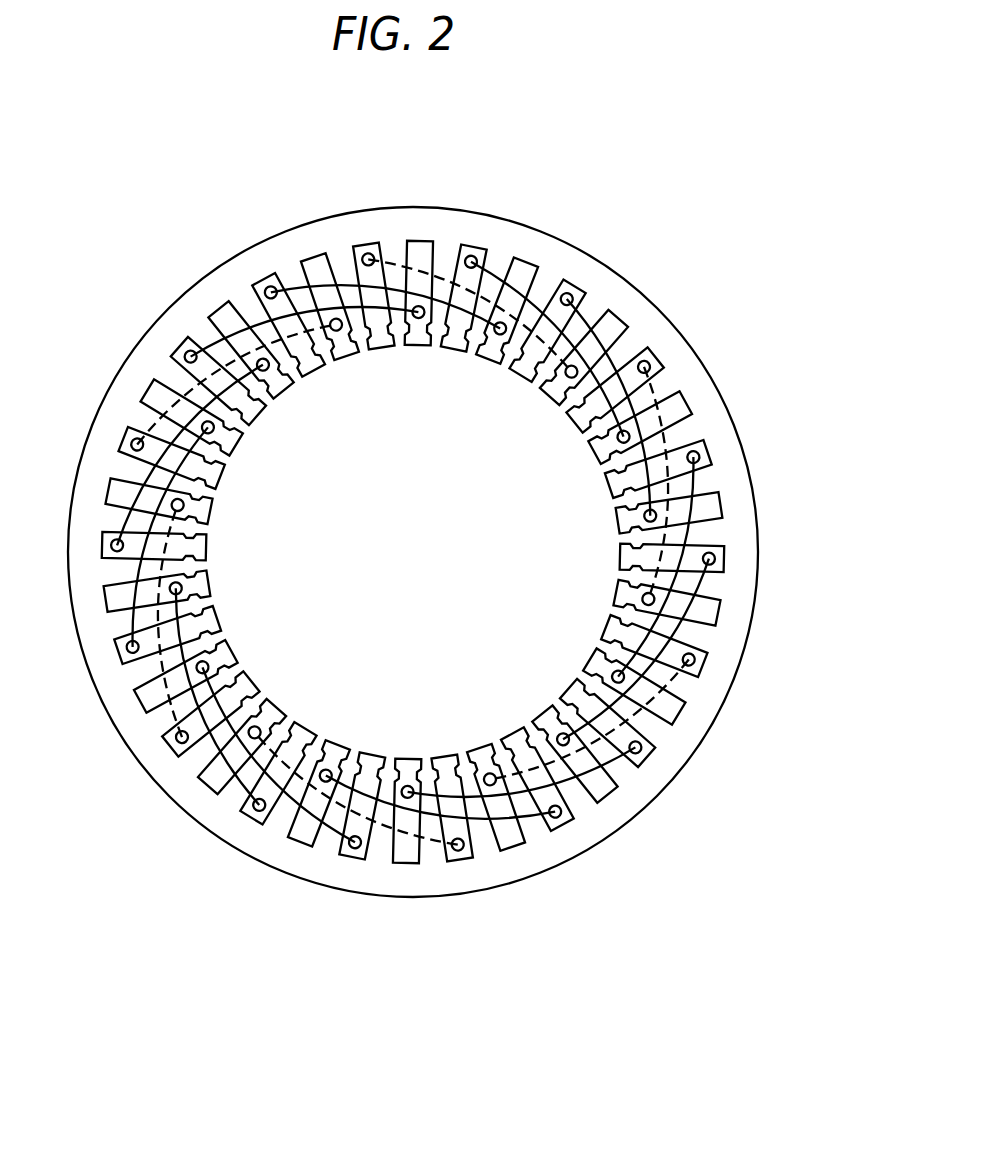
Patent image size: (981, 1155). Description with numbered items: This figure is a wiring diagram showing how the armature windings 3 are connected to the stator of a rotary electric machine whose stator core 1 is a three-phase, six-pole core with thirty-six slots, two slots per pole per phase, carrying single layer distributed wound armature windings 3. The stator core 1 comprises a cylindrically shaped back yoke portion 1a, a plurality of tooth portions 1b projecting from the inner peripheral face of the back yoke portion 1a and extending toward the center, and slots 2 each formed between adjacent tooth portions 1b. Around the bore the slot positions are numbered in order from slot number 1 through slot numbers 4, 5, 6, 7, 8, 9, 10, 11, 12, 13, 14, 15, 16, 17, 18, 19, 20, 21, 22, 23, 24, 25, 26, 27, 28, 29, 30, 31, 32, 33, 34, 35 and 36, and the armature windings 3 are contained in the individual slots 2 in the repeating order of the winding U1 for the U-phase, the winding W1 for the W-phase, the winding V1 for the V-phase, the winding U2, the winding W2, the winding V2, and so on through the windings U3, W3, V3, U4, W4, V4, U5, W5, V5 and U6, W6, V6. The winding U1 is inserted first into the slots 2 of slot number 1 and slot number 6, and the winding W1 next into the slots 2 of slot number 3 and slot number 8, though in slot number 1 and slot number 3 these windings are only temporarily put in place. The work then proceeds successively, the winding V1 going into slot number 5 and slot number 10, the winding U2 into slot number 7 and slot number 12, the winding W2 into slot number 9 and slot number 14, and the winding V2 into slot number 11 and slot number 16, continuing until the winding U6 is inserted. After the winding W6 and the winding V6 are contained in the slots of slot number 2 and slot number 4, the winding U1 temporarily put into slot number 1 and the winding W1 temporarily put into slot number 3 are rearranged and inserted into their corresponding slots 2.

The stator core 1 is at (388, 150).
The back yoke portion 1a is at (506, 234).
The tooth portions 1b is at (362, 352).
The slots 2 is at (307, 440).
The armature windings 3 is at (752, 311).
The winding U1 is at (342, 255).
The winding U2 is at (130, 447).
The winding U3 is at (200, 748).
The winding U4 is at (462, 855).
The winding U5 is at (680, 632).
The winding U6 is at (650, 362).
The winding V1 is at (185, 356).
The winding V2 is at (140, 670).
The winding V3 is at (358, 852).
The winding V4 is at (660, 745).
The winding V5 is at (698, 456).
The winding V6 is at (447, 268).
The winding W1 is at (266, 290).
The winding W2 is at (108, 545).
The winding W3 is at (260, 808).
The winding W4 is at (578, 788).
The winding W5 is at (695, 545).
The winding W6 is at (566, 296).
The slot number 4 is at (383, 357).
The slot number 5 is at (330, 313).
The slot number 6 is at (288, 330).
The slot number 7 is at (251, 354).
The slot number 8 is at (220, 384).
The slot number 9 is at (196, 419).
The slot number 10 is at (179, 458).
The slot number 11 is at (167, 501).
The slot number 12 is at (164, 546).
The slot number 13 is at (166, 590).
The slot number 14 is at (175, 635).
The slot number 15 is at (192, 675).
The slot number 16 is at (215, 711).
The slot number 17 is at (245, 742).
The slot number 18 is at (280, 767).
The slot number 19 is at (320, 786).
The slot number 20 is at (362, 798).
The slot number 21 is at (407, 801).
The slot number 22 is at (451, 799).
The slot number 23 is at (495, 790).
The slot number 24 is at (536, 773).
The slot number 25 is at (572, 750).
The slot number 26 is at (603, 720).
The slot number 27 is at (628, 685).
The slot number 28 is at (647, 646).
The slot number 29 is at (658, 603).
The slot number 30 is at (662, 558).
The slot number 31 is at (660, 512).
The slot number 32 is at (651, 469).
The slot number 33 is at (634, 428).
The slot number 34 is at (610, 392).
The slot number 35 is at (580, 361).
The slot number 36 is at (545, 336).